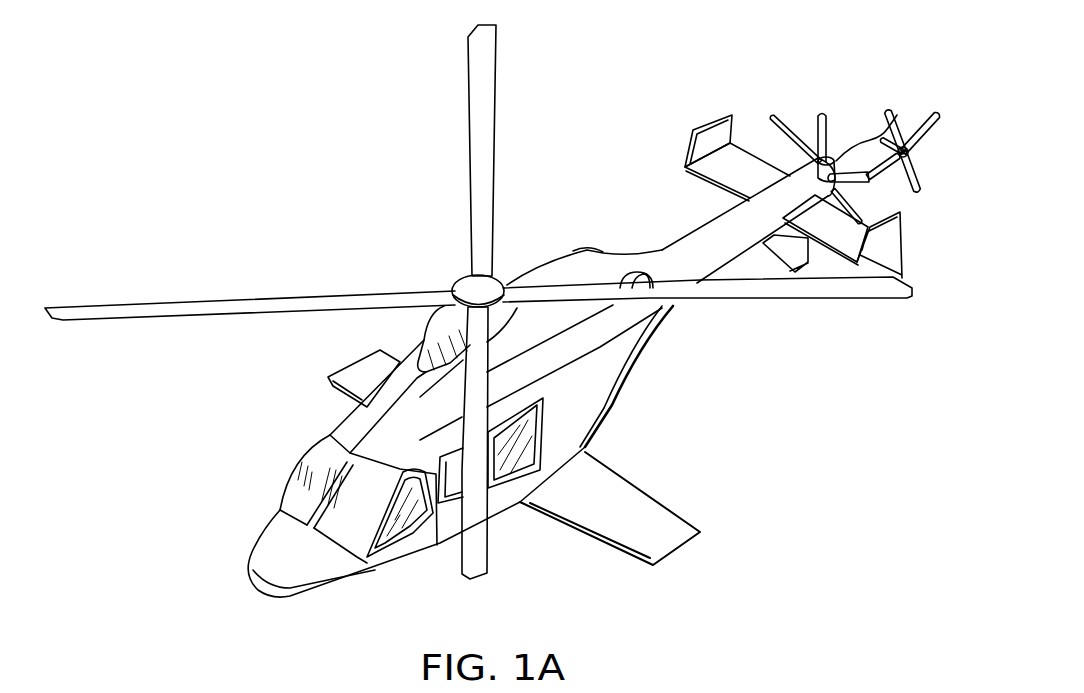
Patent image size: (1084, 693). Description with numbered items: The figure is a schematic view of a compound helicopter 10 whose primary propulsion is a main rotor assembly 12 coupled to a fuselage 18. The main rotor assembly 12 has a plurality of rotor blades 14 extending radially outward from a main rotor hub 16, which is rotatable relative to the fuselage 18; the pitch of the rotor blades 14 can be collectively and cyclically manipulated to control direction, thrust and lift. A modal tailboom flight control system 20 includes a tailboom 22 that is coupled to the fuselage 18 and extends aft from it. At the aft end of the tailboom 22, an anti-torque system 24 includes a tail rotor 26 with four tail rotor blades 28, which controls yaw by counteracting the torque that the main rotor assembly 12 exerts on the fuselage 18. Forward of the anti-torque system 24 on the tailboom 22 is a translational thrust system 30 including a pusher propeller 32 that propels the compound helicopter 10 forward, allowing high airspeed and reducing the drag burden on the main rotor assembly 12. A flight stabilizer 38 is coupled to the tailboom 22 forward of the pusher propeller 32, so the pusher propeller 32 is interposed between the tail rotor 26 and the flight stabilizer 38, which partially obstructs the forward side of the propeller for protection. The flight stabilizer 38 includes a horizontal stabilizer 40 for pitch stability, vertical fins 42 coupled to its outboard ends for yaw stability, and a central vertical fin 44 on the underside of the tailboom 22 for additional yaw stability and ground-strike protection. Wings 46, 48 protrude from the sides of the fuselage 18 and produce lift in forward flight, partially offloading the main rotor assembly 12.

The compound helicopter 10 is at (257, 119).
The main rotor assembly 12 is at (456, 274).
The rotor blades 14 is at (67, 307).
The main rotor hub 16 is at (494, 283).
The fuselage 18 is at (626, 383).
The modal tailboom flight control system 20 is at (750, 107).
The tailboom 22 is at (700, 236).
The anti-torque system 24 is at (926, 110).
The tail rotor 26 is at (923, 145).
The tail rotor blades 28 is at (921, 190).
The translational thrust system 30 is at (788, 120).
The pusher propeller 32 is at (840, 158).
The flight stabilizer 38 is at (848, 244).
The horizontal stabilizer 40 is at (879, 245).
The vertical fins 42 is at (715, 118).
The central vertical fin 44 is at (778, 240).
The wing 46 is at (612, 530).
The wing 48 is at (352, 378).